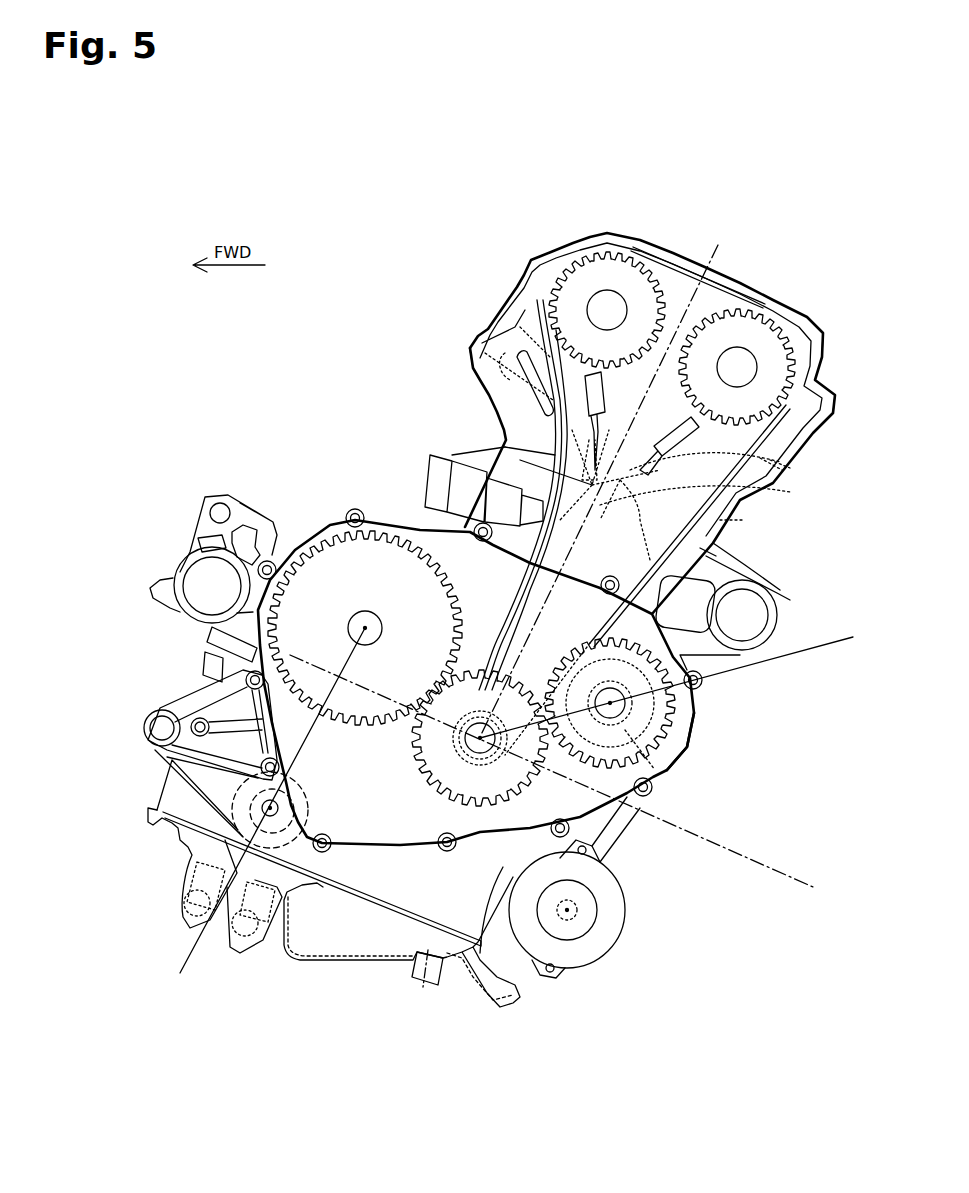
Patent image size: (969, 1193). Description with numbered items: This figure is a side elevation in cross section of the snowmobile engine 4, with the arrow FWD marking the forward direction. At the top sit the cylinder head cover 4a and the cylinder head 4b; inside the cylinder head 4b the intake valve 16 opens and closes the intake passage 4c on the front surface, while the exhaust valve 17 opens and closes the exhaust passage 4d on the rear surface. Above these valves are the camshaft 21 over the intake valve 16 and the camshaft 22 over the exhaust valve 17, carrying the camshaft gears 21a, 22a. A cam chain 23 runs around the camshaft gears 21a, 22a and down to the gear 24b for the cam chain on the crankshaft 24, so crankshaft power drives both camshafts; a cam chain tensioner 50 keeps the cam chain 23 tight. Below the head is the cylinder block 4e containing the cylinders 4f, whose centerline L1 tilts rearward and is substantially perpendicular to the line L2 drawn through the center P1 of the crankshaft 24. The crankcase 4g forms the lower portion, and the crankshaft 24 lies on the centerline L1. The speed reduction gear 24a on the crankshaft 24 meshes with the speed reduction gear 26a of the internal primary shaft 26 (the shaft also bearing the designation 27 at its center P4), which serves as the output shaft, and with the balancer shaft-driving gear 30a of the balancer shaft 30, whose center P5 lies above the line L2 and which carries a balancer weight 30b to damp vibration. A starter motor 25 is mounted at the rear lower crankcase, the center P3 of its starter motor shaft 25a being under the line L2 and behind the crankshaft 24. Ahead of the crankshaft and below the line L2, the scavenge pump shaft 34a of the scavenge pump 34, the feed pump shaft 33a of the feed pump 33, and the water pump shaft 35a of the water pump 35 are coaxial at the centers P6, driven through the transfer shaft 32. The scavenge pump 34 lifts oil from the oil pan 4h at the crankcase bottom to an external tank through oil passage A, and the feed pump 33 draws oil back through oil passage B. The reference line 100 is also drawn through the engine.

The engine 4 is at (354, 274).
The cylinder head cover 4a is at (812, 331).
The cylinder head 4b is at (802, 447).
The intake passage 4c is at (470, 362).
The exhaust passage 4d is at (780, 472).
The cylinder block 4e is at (716, 556).
The cylinders 4f is at (742, 520).
The crankcase 4g is at (692, 743).
The oil pan 4h is at (332, 950).
The intake valve 16 is at (602, 398).
The exhaust valve 17 is at (674, 430).
The camshaft 21 is at (607, 287).
The camshaft gear 21a is at (597, 268).
The camshaft 22 is at (770, 343).
The camshaft gear 22a is at (773, 353).
The cam chain 23 is at (660, 267).
The crankshaft 24 is at (471, 742).
The speed reduction gear 24a is at (427, 781).
The gear for the cam chain 24b is at (505, 762).
The starter motor 25 is at (572, 895).
The starter motor shaft 25a is at (572, 918).
The internal primary shaft 26 is at (384, 628).
The balancer 27 is at (365, 628).
The speed reduction gear 26a is at (450, 575).
The balancer shaft 30 is at (645, 719).
The balancer shaft-driving gear 30a is at (660, 698).
The balancer weight 30b is at (658, 780).
The transfer shaft 32 is at (294, 813).
The feed pump 33 is at (270, 810).
The scavenge pump 34 is at (322, 810).
The water pump 35 is at (306, 816).
The scavenge pump shaft 34a is at (384, 842).
The feed pump shaft 33a is at (294, 813).
The water pump shaft 35a is at (294, 813).
The cam chain tensioner 50 is at (498, 431).
The reference line 100 is at (186, 955).
The centerline of the cylinders L1 is at (715, 250).
The line connecting the crankshaft center and front axle center L2 is at (787, 877).
The center of the crankshaft P1 is at (478, 738).
The center of the starter motor shaft P3 is at (570, 912).
The balancer center P4 is at (362, 627).
The center of the balancer shaft P5 is at (615, 704).
The centers of the pump shafts P6 is at (278, 806).
The oil passage A is at (182, 903).
The oil passage B is at (245, 926).